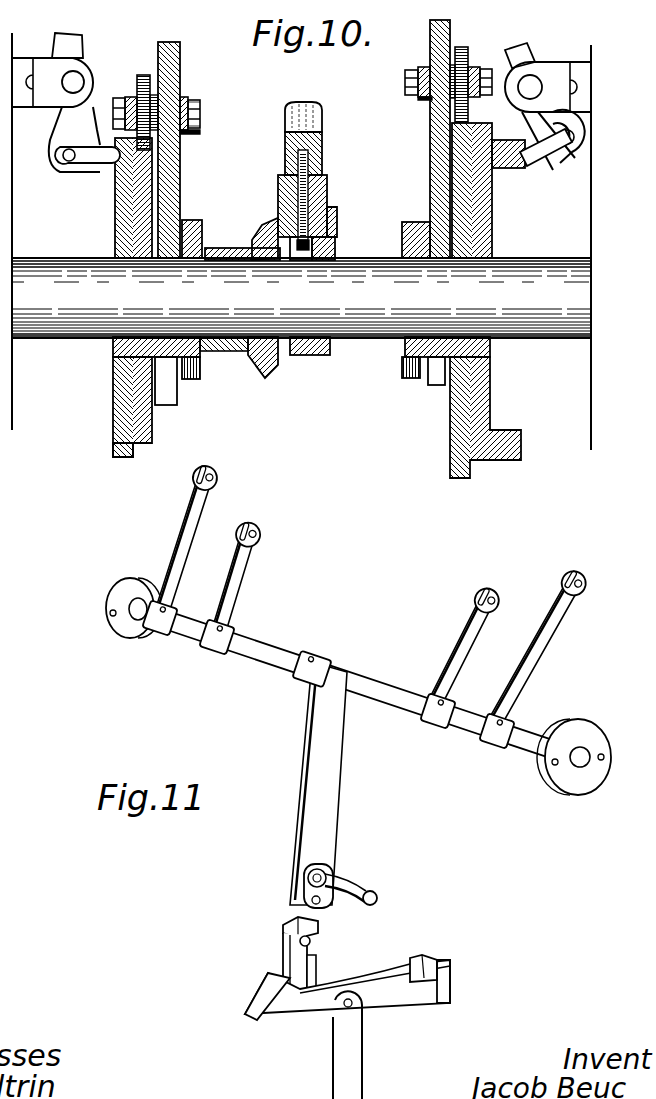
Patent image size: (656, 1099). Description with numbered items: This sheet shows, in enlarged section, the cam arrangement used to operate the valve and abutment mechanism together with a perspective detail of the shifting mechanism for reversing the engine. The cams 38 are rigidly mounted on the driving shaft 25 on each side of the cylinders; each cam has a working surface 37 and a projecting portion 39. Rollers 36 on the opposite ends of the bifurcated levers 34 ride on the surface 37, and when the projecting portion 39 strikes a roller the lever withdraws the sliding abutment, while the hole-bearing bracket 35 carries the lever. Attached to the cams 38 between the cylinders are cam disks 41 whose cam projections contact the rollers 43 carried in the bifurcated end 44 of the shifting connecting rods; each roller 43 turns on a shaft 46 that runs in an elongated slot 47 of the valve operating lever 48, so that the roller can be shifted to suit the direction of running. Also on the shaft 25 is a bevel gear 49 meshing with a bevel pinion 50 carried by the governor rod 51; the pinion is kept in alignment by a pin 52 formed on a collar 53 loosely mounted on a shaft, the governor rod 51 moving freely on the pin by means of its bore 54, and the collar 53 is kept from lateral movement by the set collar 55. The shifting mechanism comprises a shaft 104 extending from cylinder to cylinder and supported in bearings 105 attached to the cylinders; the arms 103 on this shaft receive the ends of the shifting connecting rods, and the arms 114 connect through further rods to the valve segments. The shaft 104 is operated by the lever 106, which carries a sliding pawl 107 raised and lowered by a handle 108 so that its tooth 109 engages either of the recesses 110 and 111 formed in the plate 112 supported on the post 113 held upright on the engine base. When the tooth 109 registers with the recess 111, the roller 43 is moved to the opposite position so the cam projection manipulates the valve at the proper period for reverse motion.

In FIG. 10, the driving shaft 25 is at (301, 298).
In FIG. 10, the bifurcated lever 34 is at (62, 40).
In FIG. 10, the bracket 35 is at (18, 62).
In FIG. 10, the roller 36 is at (56, 172).
In FIG. 10, the surface 37 is at (113, 447).
In FIG. 10, the cam 38 is at (492, 216).
In FIG. 10, the projecting portion 39 is at (530, 165).
In FIG. 10, the cam disk 41 is at (452, 421).
In FIG. 10, the roller 43 is at (143, 76).
In FIG. 10, the bifurcated end 44 is at (129, 97).
In FIG. 10, the shaft 46 is at (201, 113).
In FIG. 10, the elongated slot 47 is at (181, 138).
In FIG. 10, the valve operating lever 48 is at (181, 52).
In FIG. 10, the bevel gear 49 is at (233, 248).
In FIG. 10, the bevel pinion 50 is at (278, 193).
In FIG. 10, the governor rod 51 is at (323, 116).
In FIG. 10, the pin 52 is at (323, 155).
In FIG. 10, the collar 53 is at (301, 357).
In FIG. 10, the bore 54 is at (329, 201).
In FIG. 10, the set collar 55 is at (336, 246).
In FIG. 11, the arm 103 is at (239, 583).
In FIG. 11, the shaft 104 is at (388, 688).
In FIG. 11, the bearing 105 is at (128, 573).
In FIG. 11, the lever 106 is at (327, 803).
In FIG. 11, the sliding pawl 107 is at (313, 940).
In FIG. 11, the handle 108 is at (368, 893).
In FIG. 11, the tooth 109 is at (300, 990).
In FIG. 11, the recess 110 is at (315, 977).
In FIG. 11, the recess 111 is at (440, 972).
In FIG. 11, the plate 112 is at (441, 1003).
In FIG. 11, the post 113 is at (362, 1068).
In FIG. 11, the arm 114 is at (212, 490).